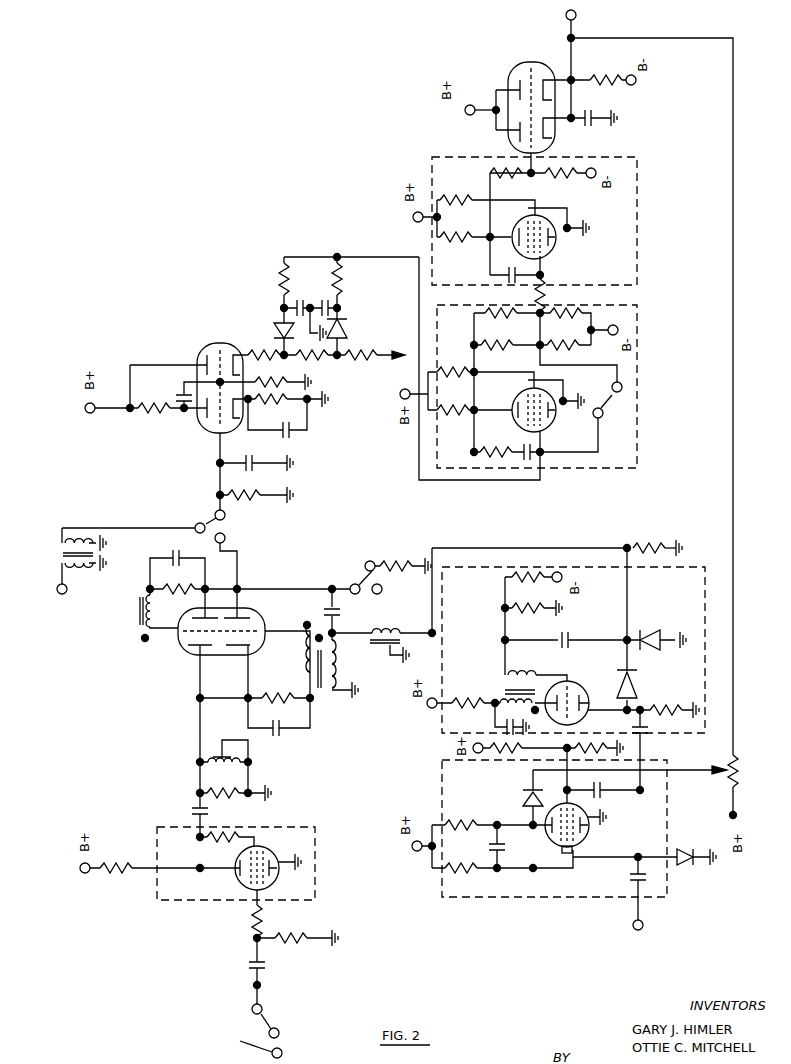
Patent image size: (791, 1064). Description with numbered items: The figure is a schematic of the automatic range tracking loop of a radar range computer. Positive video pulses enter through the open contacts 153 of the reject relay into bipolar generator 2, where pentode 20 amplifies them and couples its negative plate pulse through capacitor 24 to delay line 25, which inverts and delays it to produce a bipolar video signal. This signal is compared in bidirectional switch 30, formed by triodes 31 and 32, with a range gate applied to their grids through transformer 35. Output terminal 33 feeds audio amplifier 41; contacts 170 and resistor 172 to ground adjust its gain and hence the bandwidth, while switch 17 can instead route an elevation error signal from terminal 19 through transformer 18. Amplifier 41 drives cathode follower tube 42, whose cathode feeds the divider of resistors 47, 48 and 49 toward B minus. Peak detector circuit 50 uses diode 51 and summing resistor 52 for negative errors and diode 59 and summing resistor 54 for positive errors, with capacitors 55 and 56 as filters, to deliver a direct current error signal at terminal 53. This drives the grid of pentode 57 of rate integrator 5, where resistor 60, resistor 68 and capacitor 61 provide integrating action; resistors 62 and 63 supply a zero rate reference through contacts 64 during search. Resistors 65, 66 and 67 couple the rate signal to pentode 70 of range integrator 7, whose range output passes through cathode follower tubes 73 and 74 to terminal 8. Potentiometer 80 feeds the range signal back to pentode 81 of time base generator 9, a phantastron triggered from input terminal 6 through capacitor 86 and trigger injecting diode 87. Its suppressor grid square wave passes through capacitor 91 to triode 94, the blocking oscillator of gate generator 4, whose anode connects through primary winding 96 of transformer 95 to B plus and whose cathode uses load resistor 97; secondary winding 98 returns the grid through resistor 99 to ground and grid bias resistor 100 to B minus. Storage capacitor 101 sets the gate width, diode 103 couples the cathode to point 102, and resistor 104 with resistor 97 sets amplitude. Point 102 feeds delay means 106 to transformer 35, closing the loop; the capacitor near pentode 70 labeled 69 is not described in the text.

The bipolar generator 2 is at (157, 856).
The gate generator 4 is at (442, 612).
The rate integrator 5 is at (437, 462).
The input terminal 6 is at (636, 930).
The range integrator 7 is at (638, 190).
The terminal 8 is at (568, 36).
The time base generator 9 is at (432, 790).
The switch 17 is at (200, 521).
The transformer 18 is at (58, 545).
The terminal 19 is at (60, 597).
The pentode 20 is at (214, 858).
The capacitor 24 is at (195, 810).
The delay line 25 is at (200, 752).
The bidirectional switch 30 is at (142, 584).
The triode 31 is at (238, 656).
The triode 32 is at (191, 656).
The output terminal 33 is at (240, 585).
The transformer 35 is at (323, 696).
The audio amplifier 41 is at (203, 428).
The cathode follower tube 42 is at (203, 345).
The resistor 47 is at (257, 350).
The resistor 48 is at (312, 360).
The resistor 49 is at (363, 362).
The peak detector circuit 50 is at (342, 308).
The diode 51 is at (275, 322).
The summing resistor 52 is at (281, 280).
The terminal 53 is at (305, 257).
The summing resistor 54 is at (346, 290).
The capacitor 55 is at (301, 300).
The capacitor 56 is at (326, 300).
The pentode 57 is at (515, 410).
The diode 59 is at (350, 333).
The resistor 60 is at (486, 452).
The capacitor 61 is at (523, 465).
The resistor 62 is at (510, 342).
The resistor 63 is at (568, 347).
The contacts 64 is at (608, 406).
The resistor 65 is at (503, 311).
The resistor 66 is at (565, 312).
The resistor 67 is at (545, 290).
The resistor 68 is at (447, 412).
The capacitor 69 is at (511, 266).
The pentode 70 is at (557, 245).
The cathode follower tube 73 is at (507, 140).
The cathode follower tube 74 is at (514, 72).
The potentiometer 80 is at (740, 760).
The pentode 81 is at (590, 830).
The capacitor 86 is at (632, 873).
The trigger injecting diode 87 is at (682, 848).
The capacitor 91 is at (648, 735).
The triode 94 is at (578, 688).
The transformer 95 is at (499, 685).
The primary winding 96 is at (497, 700).
The load resistor 97 is at (666, 704).
The secondary winding 98 is at (517, 672).
The resistor 99 is at (538, 611).
The grid bias resistor 100 is at (518, 580).
The storage capacitor 101 is at (571, 635).
The point 102 is at (626, 545).
The diode 103 is at (637, 686).
The resistor 104 is at (645, 542).
The delay means 106 is at (381, 628).
The contacts 153 is at (279, 1021).
The contacts 170 is at (356, 580).
The resistor 172 is at (386, 556).